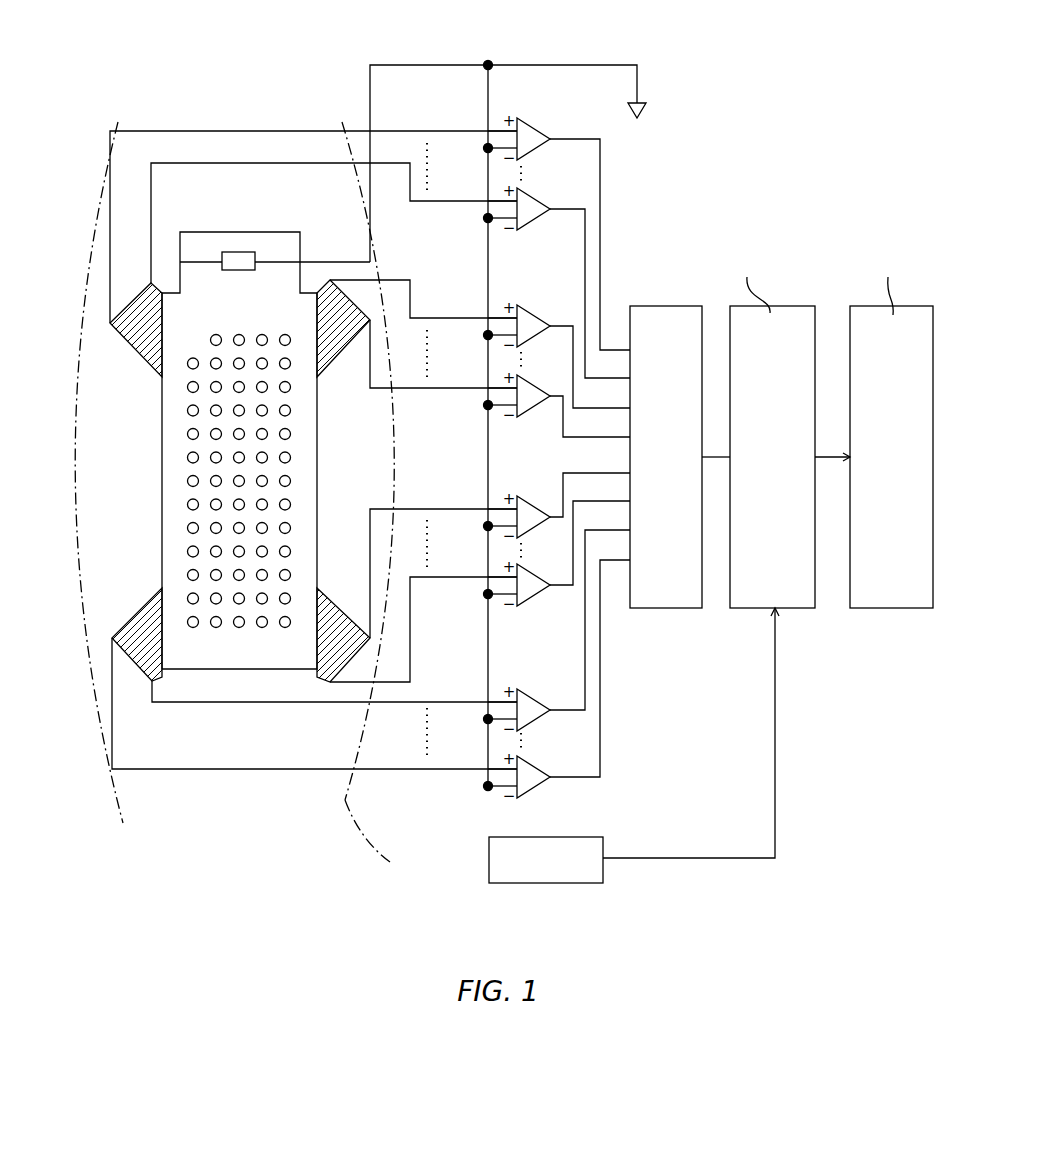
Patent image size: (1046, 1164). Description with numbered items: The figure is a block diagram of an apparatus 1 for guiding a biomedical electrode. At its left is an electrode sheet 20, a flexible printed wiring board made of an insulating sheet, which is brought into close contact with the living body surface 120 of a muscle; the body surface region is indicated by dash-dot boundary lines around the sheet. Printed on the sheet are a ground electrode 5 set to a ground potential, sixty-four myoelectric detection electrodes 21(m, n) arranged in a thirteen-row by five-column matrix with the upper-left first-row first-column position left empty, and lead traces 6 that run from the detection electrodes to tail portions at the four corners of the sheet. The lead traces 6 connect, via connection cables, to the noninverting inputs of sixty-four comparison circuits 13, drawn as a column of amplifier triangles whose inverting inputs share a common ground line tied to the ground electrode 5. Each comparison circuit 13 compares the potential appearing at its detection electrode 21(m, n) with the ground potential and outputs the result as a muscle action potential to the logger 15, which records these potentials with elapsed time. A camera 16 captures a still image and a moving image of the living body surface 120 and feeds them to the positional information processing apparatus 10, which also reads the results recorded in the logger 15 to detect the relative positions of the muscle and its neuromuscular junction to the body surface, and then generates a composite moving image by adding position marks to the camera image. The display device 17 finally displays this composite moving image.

The apparatus for guiding a biomedical electrode 1 is at (245, 59).
The ground electrode 5 is at (180, 262).
The lead traces 6 is at (128, 343).
The positional information processing apparatus 10 is at (755, 556).
The comparison circuits 13 is at (536, 194).
The logger 15 is at (647, 556).
The camera 16 is at (606, 843).
The display device 17 is at (875, 556).
The electrode sheet 20 is at (126, 440).
The myoelectric detection electrodes 21 is at (236, 438).
The living body surface 120 is at (242, 505).